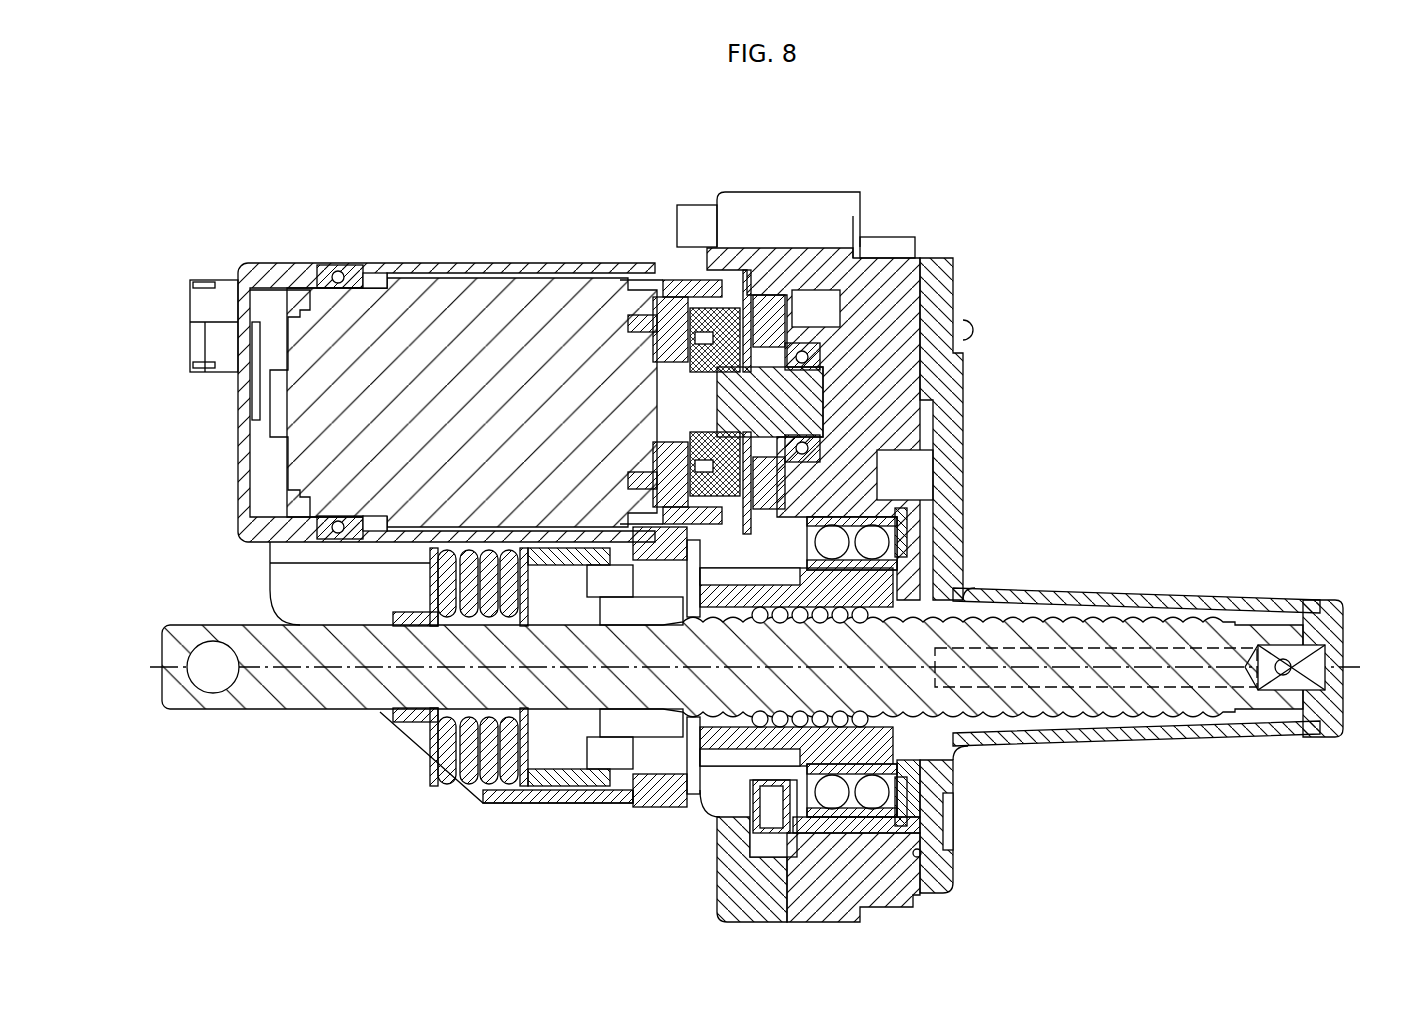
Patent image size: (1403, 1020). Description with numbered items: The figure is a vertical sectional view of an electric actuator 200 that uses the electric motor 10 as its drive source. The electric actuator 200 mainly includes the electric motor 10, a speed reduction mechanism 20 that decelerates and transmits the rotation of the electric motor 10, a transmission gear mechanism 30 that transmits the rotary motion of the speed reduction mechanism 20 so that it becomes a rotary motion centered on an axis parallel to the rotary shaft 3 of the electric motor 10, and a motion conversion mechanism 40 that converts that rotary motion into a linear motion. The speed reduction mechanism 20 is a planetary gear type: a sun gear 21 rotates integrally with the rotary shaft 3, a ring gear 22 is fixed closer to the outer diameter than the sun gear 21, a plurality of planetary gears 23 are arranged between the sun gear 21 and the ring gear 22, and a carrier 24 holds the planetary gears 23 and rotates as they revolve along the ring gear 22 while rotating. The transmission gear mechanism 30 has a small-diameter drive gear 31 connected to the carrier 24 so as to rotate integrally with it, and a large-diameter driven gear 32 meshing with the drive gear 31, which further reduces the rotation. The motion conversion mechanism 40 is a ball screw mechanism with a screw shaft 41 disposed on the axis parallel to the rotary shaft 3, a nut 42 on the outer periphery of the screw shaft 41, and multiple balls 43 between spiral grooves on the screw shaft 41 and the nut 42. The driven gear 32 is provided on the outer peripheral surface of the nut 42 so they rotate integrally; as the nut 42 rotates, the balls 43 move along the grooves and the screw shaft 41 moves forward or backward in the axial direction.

The electric actuator 200 is at (697, 147).
The electric motor 10 is at (487, 297).
The speed reduction mechanism 20 is at (670, 272).
The sun gear 21 is at (698, 383).
The ring gear 22 is at (653, 280).
The planetary gears 23 is at (697, 300).
The carrier 24 is at (740, 310).
The small-diameter drive gear 31 is at (770, 320).
The transmission gear mechanism 30 is at (790, 475).
The rotary shaft 3 is at (708, 413).
The large-diameter driven gear 32 is at (770, 537).
The motion conversion mechanism 40 is at (923, 765).
The screw shaft 41 is at (715, 703).
The nut 42 is at (773, 753).
The balls 43 is at (857, 720).